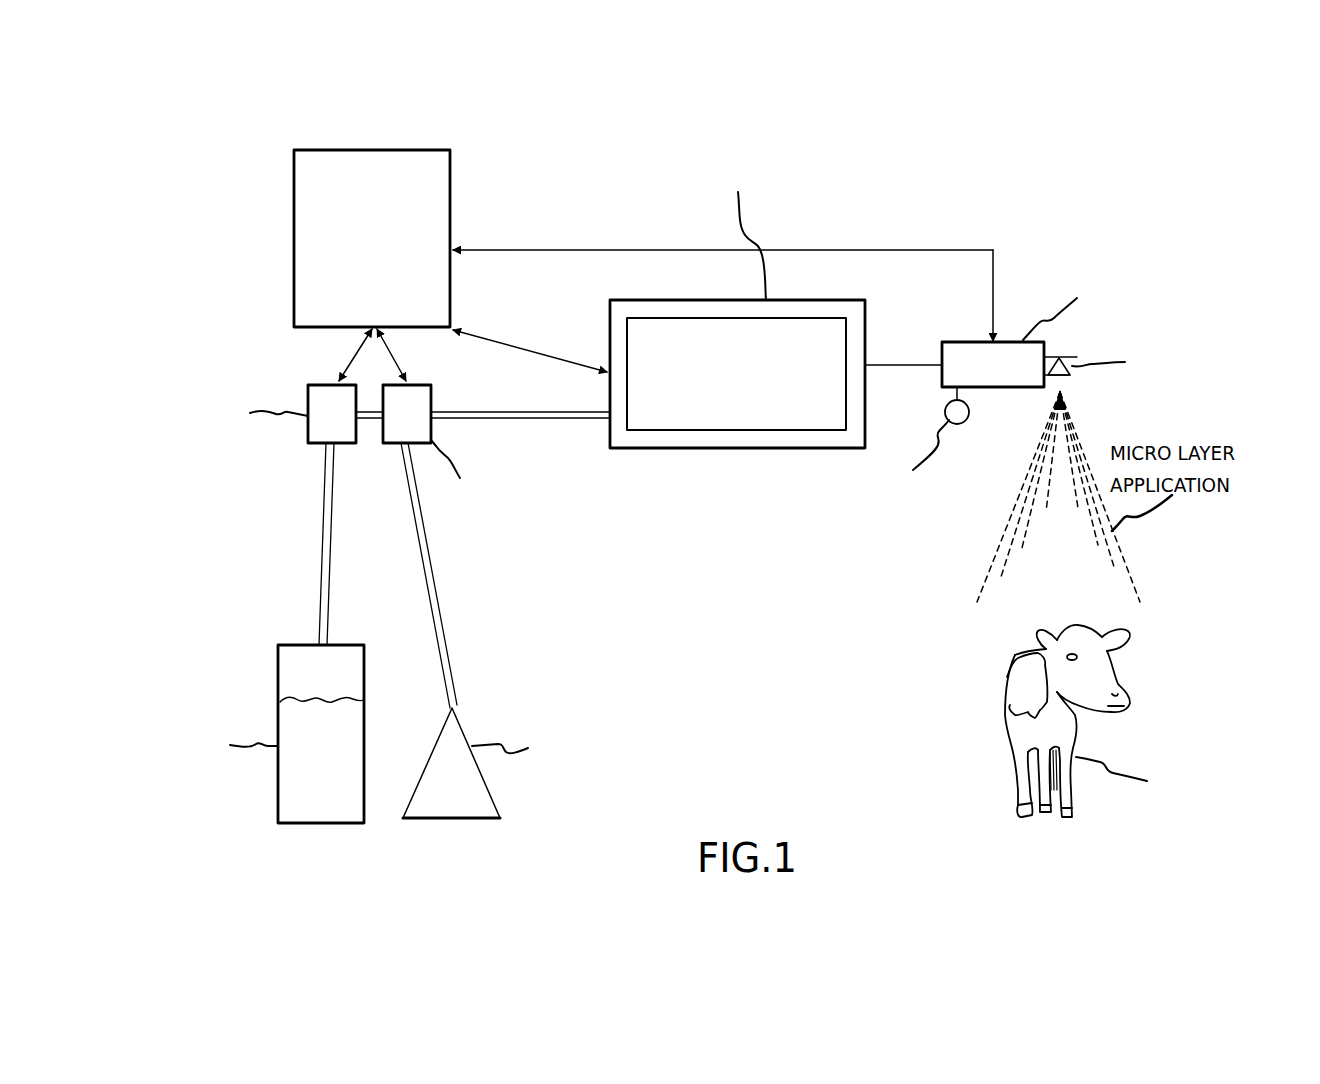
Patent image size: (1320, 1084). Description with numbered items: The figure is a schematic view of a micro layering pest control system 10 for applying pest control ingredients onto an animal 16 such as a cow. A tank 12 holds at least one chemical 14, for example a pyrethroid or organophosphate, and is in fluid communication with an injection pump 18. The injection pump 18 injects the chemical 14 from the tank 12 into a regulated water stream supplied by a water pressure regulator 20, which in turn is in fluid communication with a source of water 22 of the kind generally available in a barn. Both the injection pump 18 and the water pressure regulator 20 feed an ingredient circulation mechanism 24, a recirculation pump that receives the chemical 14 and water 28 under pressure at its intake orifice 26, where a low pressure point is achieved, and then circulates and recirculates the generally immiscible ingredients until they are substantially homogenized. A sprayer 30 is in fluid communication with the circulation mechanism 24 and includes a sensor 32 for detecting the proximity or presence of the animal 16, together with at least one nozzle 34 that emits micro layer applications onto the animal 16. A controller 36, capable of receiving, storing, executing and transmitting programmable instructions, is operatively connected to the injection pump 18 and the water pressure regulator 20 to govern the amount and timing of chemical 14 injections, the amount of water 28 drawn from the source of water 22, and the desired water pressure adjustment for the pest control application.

The micro layering pest control system 10 is at (941, 186).
The tank 12 is at (318, 823).
The chemical 14 is at (278, 800).
The animal 16 is at (1007, 680).
The injection pump 18 is at (308, 430).
The water pressure regulator 20 is at (383, 445).
The source of water 22 is at (473, 821).
The ingredient circulation mechanism 24 is at (735, 449).
The intake orifice 26 is at (608, 420).
The water 28 is at (431, 805).
The sprayer 30 is at (1047, 348).
The sensor 32 is at (965, 422).
The nozzle 34 is at (1068, 372).
The controller 36 is at (293, 180).